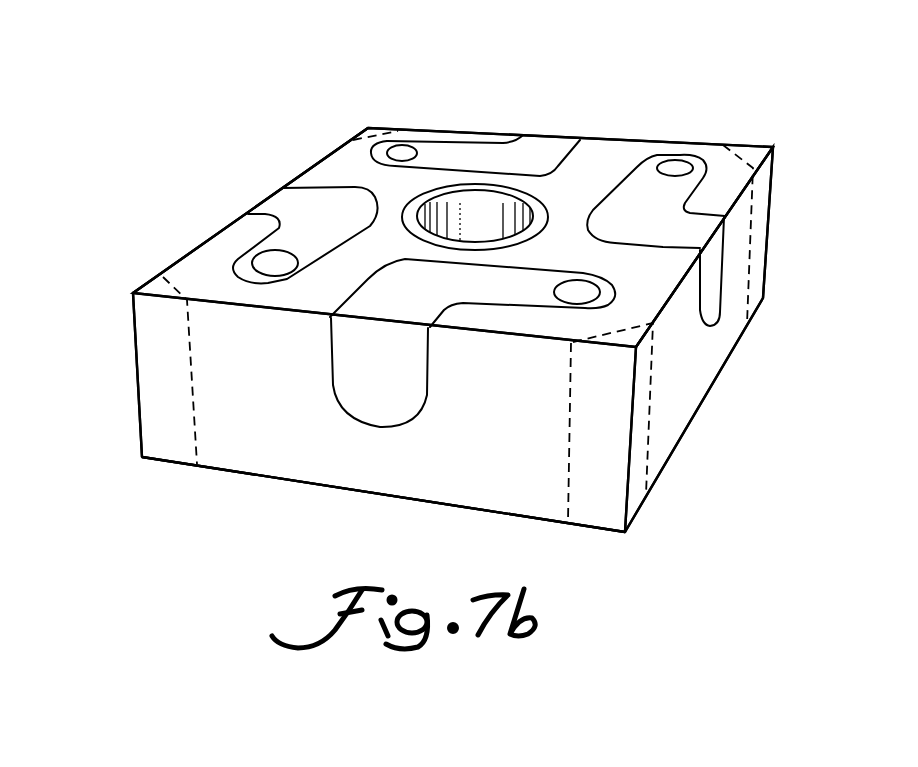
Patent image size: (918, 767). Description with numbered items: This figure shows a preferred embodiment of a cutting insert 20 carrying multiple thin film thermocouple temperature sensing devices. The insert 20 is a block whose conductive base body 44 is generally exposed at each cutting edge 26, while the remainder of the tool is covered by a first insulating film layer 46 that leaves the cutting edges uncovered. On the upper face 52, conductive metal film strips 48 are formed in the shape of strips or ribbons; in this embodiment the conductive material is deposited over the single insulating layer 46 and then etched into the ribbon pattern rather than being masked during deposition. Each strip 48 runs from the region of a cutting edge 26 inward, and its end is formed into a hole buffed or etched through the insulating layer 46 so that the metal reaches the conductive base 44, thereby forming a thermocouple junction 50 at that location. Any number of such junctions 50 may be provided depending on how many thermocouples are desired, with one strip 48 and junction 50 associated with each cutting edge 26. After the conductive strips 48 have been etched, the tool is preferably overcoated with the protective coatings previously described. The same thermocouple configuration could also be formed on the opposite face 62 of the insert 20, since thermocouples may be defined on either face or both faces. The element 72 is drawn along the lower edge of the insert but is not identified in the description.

The cutting insert 20 is at (688, 92).
The cutting edge 26 is at (137, 397).
The conductive base body 44 is at (763, 230).
The insulating film layer 46 is at (617, 151).
The conductive metal film strips 48 is at (540, 148).
The thermocouple junction 50 is at (402, 147).
The face 52 is at (326, 162).
The opposite face 62 is at (300, 481).
The bottom edge 72 is at (463, 506).